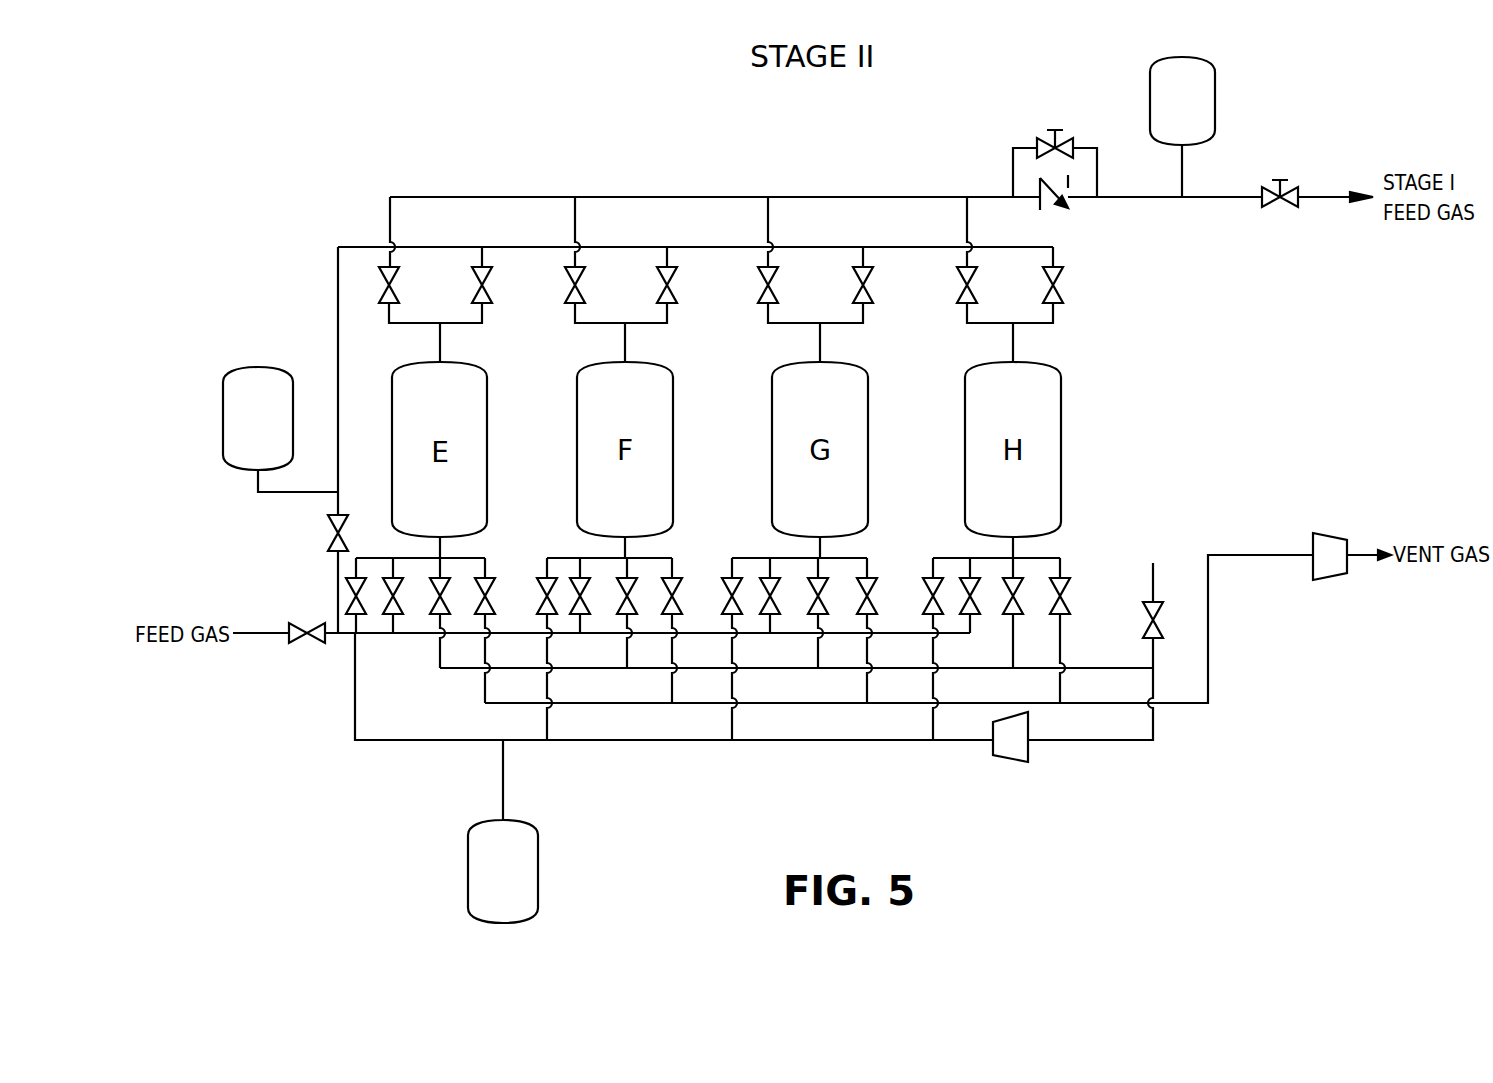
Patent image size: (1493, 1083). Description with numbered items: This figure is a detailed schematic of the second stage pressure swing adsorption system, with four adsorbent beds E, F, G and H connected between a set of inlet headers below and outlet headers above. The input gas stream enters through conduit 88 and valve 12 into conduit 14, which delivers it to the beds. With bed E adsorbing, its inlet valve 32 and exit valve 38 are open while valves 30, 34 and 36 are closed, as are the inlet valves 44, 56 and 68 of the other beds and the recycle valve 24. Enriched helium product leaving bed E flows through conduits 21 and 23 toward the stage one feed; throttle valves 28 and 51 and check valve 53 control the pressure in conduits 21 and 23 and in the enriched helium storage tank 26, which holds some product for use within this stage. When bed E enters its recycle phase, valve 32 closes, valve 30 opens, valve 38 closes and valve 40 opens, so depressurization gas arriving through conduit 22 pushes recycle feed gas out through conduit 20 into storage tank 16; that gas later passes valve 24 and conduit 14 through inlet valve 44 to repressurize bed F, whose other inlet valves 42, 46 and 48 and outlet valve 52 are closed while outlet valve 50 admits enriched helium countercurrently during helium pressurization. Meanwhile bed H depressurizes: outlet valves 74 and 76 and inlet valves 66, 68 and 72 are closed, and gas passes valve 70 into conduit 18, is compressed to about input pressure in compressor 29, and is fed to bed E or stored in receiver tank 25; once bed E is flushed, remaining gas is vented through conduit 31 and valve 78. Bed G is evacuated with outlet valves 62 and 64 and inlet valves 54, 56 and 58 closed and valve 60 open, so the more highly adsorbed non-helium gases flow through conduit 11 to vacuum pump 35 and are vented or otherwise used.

The conduit 11 is at (1120, 745).
The valve 12 is at (303, 648).
The conduit 14 is at (348, 645).
The storage tank 16 is at (243, 385).
The conduit 18 is at (442, 670).
The conduit 20 is at (355, 247).
The conduit 21 is at (877, 197).
The conduit 22 is at (848, 742).
The conduit 23 is at (1324, 200).
The recycle valve 24 is at (330, 535).
The storage tank 25 is at (525, 893).
The enriched helium storage tank 26 is at (1205, 92).
The throttle valve 28 is at (1268, 207).
The compressor 29 is at (1012, 757).
The valve 30 is at (348, 595).
The conduit 31 is at (1150, 657).
The inlet valve 32 is at (396, 585).
The valve 34 is at (446, 588).
The vacuum pump 35 is at (1330, 570).
The valve 36 is at (490, 580).
The exit valve 38 is at (385, 300).
The valve 40 is at (489, 292).
The inlet valve 42 is at (540, 598).
The inlet valve 44 is at (583, 620).
The inlet valve 46 is at (633, 590).
The inlet valve 48 is at (678, 592).
The outlet valve 50 is at (570, 290).
The throttle valve 51 is at (1042, 150).
The outlet valve 52 is at (673, 292).
The check valve 53 is at (1072, 205).
The inlet valve 54 is at (728, 596).
The inlet valve 56 is at (775, 615).
The inlet valve 58 is at (825, 590).
The valve 60 is at (872, 590).
The outlet valve 62 is at (763, 290).
The outlet valve 64 is at (868, 290).
The inlet valve 66 is at (928, 596).
The inlet valve 68 is at (975, 615).
The valve 70 is at (1020, 590).
The inlet valve 72 is at (1067, 598).
The outlet valve 74 is at (963, 295).
The outlet valve 76 is at (1066, 295).
The valve 78 is at (1146, 625).
The conduit 88 is at (266, 648).